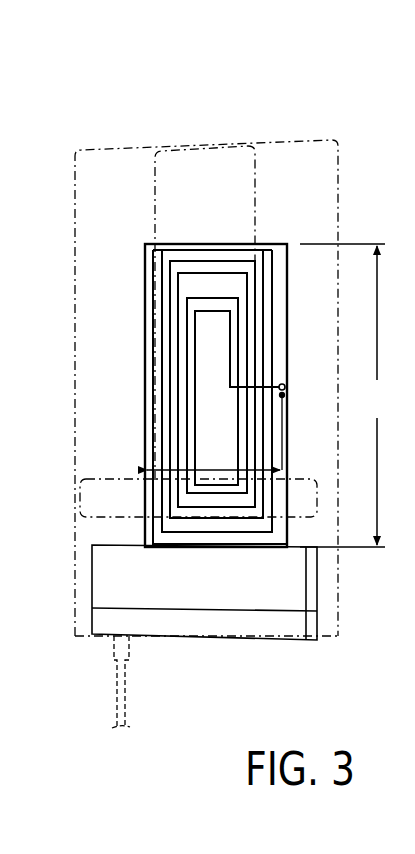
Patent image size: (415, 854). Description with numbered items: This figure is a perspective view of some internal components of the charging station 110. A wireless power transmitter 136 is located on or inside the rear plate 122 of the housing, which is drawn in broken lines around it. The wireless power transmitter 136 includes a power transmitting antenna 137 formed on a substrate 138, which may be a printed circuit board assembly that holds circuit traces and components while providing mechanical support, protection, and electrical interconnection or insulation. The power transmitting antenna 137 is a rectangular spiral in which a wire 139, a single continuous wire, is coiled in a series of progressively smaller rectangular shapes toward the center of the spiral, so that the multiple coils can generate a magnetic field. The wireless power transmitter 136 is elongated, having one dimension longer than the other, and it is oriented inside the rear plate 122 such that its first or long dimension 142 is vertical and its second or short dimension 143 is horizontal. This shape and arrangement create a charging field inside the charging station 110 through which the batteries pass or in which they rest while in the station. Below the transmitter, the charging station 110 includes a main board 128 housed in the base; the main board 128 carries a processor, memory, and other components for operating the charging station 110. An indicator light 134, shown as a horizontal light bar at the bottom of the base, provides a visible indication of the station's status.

The charging station 110 is at (280, 88).
The rear plate 122 is at (338, 183).
The main board 128 is at (192, 588).
The indicator light 134 is at (272, 627).
The wireless power transmitter 136 is at (145, 287).
The power transmitting antenna 137 is at (175, 487).
The substrate 138 is at (145, 318).
The wire 139 is at (182, 244).
The first or long dimension 142 is at (347, 395).
The second or short dimension 143 is at (216, 468).